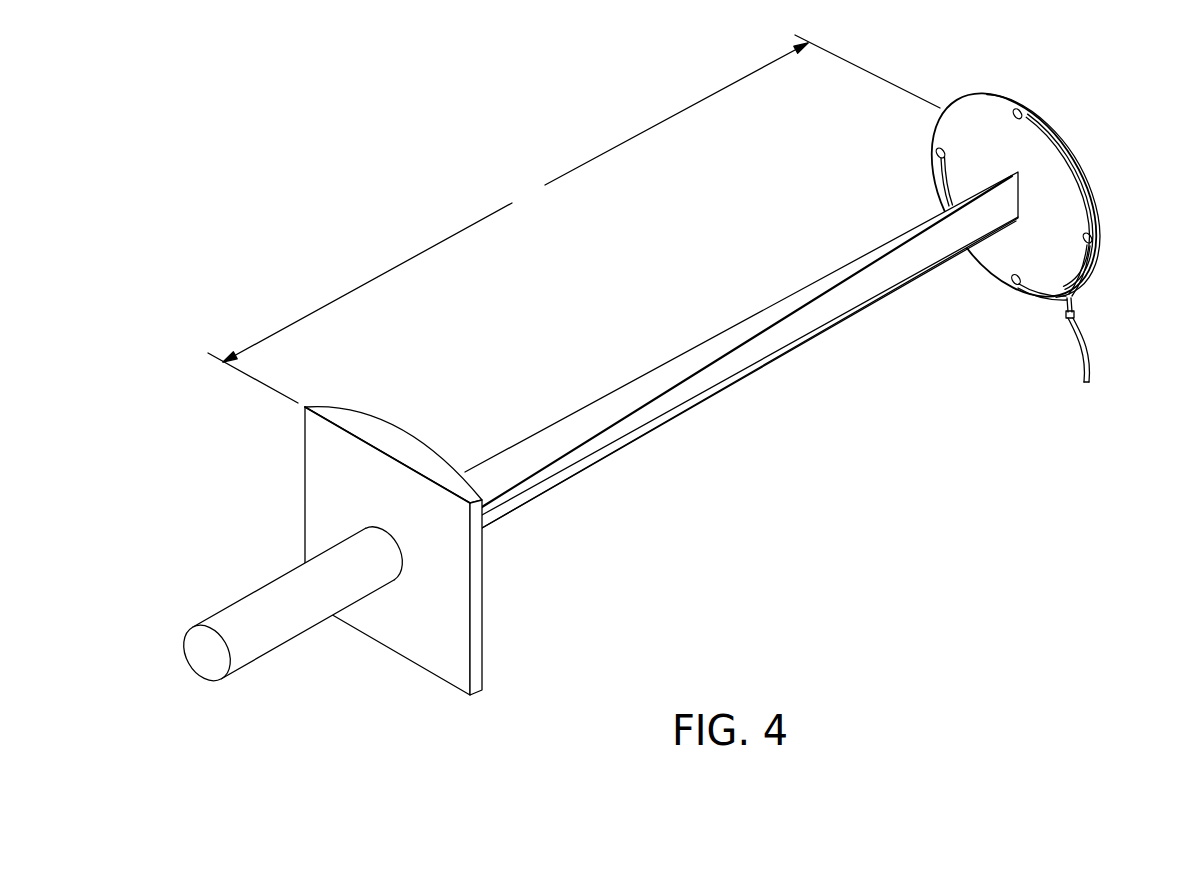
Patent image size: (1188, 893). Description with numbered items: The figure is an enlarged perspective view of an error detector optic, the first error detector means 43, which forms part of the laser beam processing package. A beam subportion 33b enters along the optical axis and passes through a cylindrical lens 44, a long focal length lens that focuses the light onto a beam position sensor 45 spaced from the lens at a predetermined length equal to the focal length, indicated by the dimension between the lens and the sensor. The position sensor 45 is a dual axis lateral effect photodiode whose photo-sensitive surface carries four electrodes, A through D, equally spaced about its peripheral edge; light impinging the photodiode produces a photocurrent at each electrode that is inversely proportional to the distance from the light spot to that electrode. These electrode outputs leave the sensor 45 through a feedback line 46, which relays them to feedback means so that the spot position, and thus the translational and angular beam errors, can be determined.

The first error detector means 43 is at (427, 179).
The cylindrical lens 44 is at (450, 617).
The beam position sensor 45 is at (1058, 174).
The feedback line 46 is at (1087, 372).
The second subportion 33b is at (267, 588).